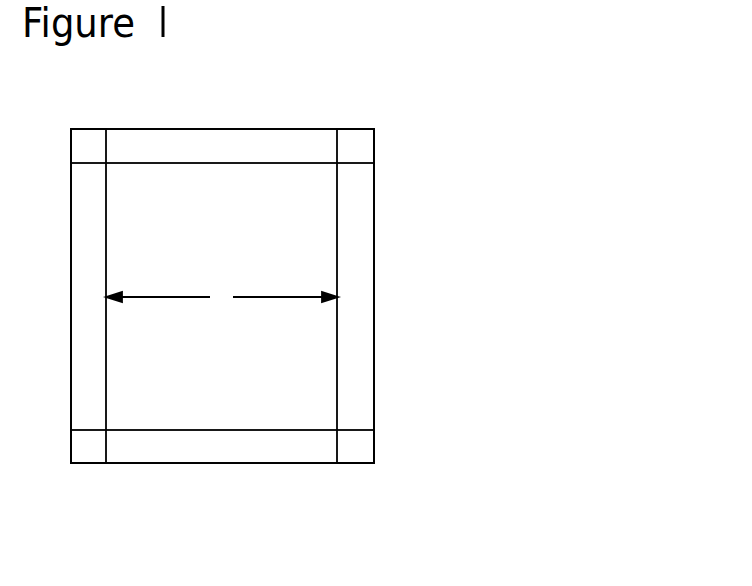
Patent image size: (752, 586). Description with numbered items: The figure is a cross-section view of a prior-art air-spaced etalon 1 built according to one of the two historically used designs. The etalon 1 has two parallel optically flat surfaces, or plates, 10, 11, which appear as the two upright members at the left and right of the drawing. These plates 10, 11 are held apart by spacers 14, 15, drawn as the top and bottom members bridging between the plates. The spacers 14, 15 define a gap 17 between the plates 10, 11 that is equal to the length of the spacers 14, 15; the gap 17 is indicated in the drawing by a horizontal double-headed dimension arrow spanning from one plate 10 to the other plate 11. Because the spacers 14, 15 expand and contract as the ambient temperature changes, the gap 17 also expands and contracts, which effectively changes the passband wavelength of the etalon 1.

The etalon 1 is at (463, 0).
The optically flat surface 10 is at (91, 449).
The optically flat surface 11 is at (352, 450).
The spacer 14 is at (203, 143).
The spacer 15 is at (219, 456).
The gap 17 is at (223, 298).